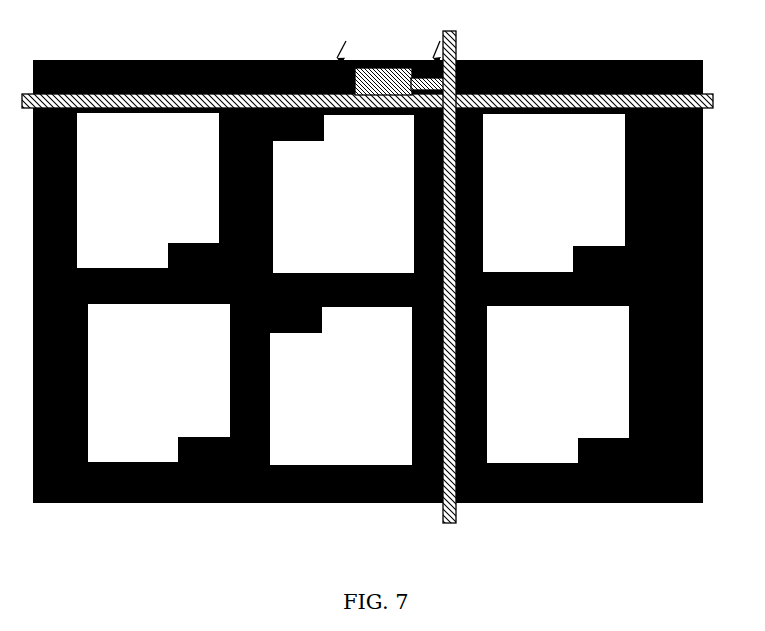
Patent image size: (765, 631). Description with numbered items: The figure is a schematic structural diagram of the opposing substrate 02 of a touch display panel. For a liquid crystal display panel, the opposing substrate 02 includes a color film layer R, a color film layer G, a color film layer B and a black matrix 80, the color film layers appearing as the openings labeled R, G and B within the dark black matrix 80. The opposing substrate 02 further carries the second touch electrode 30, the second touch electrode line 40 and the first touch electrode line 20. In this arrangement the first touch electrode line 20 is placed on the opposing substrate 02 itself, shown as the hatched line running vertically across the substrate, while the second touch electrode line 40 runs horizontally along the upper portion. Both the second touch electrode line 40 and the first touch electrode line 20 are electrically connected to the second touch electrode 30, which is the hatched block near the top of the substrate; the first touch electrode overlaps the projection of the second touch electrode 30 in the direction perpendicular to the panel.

The opposing substrate 02 is at (90, 27).
The second touch electrode line 40 is at (291, 61).
The black matrix 80 is at (678, 61).
The second touch electrode 30 is at (382, 68).
The first touch electrode line 20 is at (456, 46).